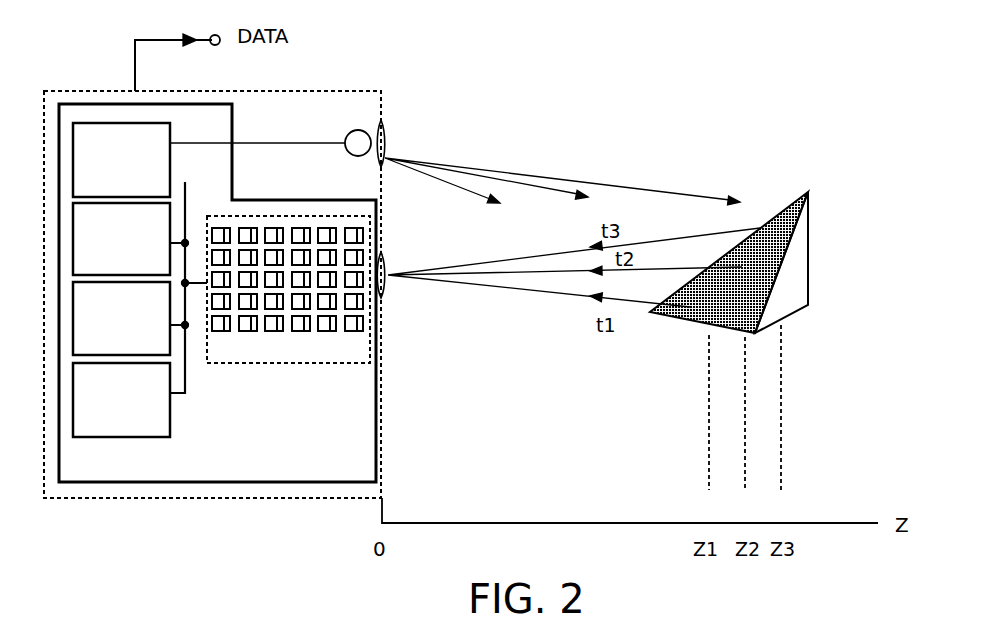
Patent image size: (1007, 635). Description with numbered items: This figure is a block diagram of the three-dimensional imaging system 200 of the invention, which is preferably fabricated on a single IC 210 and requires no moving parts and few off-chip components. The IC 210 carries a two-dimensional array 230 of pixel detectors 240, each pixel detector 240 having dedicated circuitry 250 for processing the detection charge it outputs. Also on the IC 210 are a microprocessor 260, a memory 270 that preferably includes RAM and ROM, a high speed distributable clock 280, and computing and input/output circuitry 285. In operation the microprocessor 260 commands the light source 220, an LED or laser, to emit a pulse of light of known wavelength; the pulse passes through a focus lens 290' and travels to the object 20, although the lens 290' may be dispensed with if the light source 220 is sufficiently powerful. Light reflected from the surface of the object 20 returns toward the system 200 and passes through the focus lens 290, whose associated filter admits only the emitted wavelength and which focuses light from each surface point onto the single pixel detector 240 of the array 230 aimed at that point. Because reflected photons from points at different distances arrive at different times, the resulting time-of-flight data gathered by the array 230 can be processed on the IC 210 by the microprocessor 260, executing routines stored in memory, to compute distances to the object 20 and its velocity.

The object 20 is at (833, 218).
The three-dimensional imaging system 200 is at (93, 63).
The IC 210 is at (270, 186).
The light source 220 is at (347, 126).
The array of pixel detectors 230 is at (216, 207).
The pixel detector 240 is at (281, 332).
The dedicated circuitry 250 is at (270, 332).
The microprocessor 260 is at (148, 261).
The memory 270 is at (147, 341).
The high speed distributable clock 280 is at (147, 421).
The input/output circuitry 285 is at (145, 180).
The focus lens 290 is at (427, 293).
The focus lens 290' is at (413, 120).